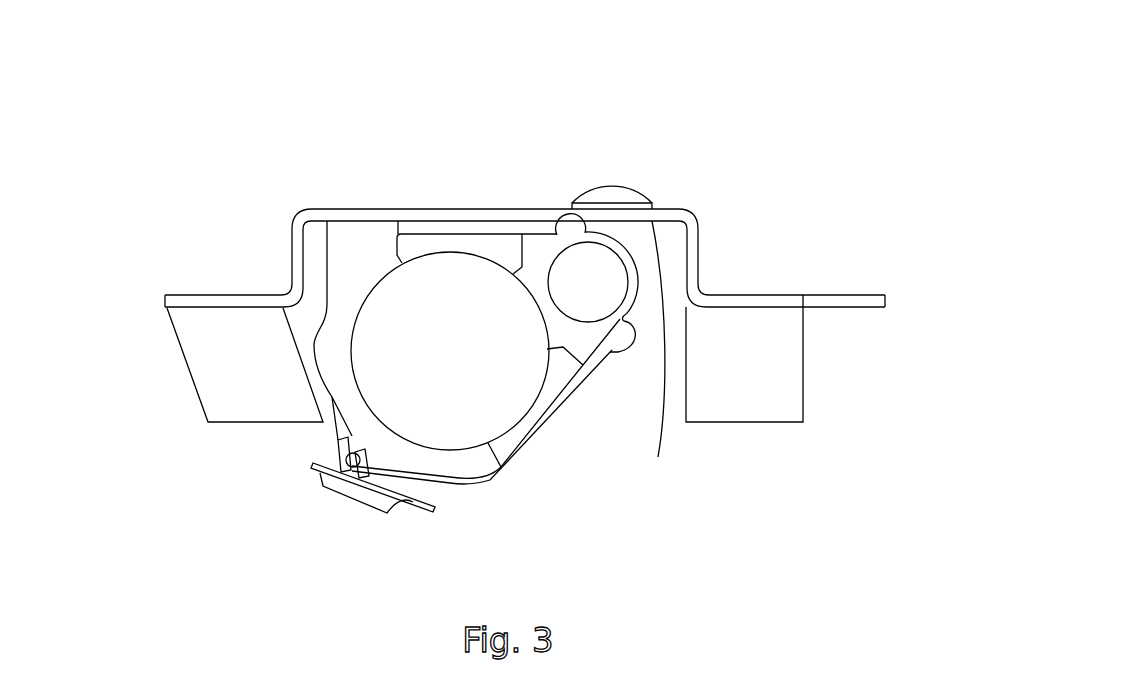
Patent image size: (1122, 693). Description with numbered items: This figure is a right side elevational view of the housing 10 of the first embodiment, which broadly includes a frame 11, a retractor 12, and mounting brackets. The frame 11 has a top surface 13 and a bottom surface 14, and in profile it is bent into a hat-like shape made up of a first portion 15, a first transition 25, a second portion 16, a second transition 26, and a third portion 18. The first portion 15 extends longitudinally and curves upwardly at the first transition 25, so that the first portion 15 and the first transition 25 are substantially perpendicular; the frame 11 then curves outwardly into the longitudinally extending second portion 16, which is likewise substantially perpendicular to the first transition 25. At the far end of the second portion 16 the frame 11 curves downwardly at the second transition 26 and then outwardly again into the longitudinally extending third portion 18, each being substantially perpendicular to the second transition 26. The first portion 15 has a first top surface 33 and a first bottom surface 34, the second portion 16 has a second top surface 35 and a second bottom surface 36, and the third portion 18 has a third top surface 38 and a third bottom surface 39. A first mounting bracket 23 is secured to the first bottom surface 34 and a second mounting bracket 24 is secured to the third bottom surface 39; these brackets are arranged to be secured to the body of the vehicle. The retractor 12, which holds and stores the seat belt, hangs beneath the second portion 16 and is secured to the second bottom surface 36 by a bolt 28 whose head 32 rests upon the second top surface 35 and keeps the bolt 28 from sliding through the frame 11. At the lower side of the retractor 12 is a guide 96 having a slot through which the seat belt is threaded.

The housing 10 is at (703, 178).
The frame 11 is at (348, 212).
The retractor 12 is at (460, 373).
The top surface 13 is at (465, 208).
The bottom surface 14 is at (655, 355).
The first portion 15 is at (182, 295).
The second portion 16 is at (485, 210).
The third portion 18 is at (842, 298).
The first mounting bracket 23 is at (215, 370).
The second mounting bracket 24 is at (765, 385).
The first transition 25 is at (290, 257).
The second transition 26 is at (690, 250).
The bolt 28 is at (590, 197).
The head 32 is at (632, 197).
The first top surface 33 is at (247, 294).
The first bottom surface 34 is at (192, 310).
The second top surface 35 is at (400, 208).
The second bottom surface 36 is at (345, 221).
The third top surface 38 is at (757, 293).
The third bottom surface 39 is at (873, 308).
The guide 96 is at (358, 492).